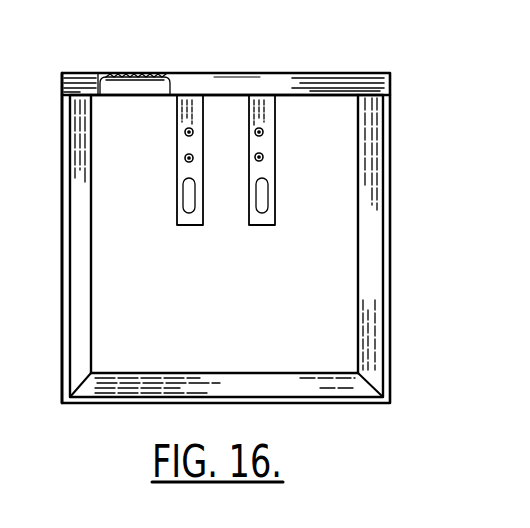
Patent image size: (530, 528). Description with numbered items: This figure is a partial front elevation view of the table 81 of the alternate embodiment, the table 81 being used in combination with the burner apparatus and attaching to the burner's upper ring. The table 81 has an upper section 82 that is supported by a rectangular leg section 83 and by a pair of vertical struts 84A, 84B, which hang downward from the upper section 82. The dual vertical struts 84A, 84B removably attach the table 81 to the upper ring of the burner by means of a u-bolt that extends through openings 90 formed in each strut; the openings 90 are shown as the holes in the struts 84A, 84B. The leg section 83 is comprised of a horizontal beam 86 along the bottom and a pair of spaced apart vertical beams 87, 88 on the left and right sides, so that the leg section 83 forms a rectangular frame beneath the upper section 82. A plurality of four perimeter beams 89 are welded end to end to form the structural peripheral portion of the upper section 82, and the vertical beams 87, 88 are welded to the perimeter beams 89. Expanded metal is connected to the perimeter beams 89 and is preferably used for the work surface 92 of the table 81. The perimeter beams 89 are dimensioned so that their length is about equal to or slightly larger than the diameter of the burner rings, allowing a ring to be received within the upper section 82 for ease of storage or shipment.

The table 81 is at (388, 73).
The upper section 82 is at (210, 74).
The leg section 83 is at (60, 311).
The vertical strut 84A is at (177, 215).
The vertical strut 84B is at (261, 225).
The horizontal beam 86 is at (226, 388).
The vertical beam 87 is at (83, 285).
The vertical beam 88 is at (370, 277).
The perimeter beam 89 is at (247, 75).
The openings 90 is at (185, 157).
The work surface 92 is at (295, 72).